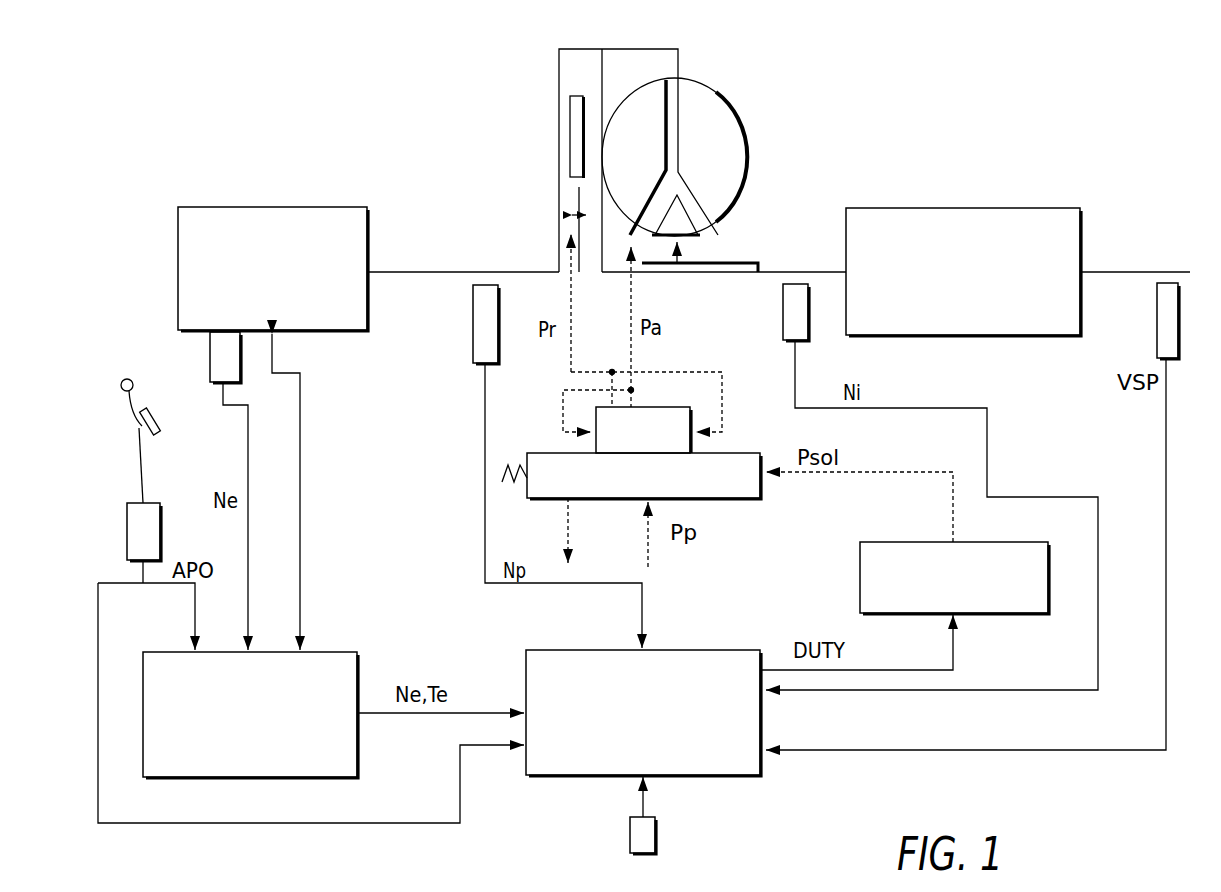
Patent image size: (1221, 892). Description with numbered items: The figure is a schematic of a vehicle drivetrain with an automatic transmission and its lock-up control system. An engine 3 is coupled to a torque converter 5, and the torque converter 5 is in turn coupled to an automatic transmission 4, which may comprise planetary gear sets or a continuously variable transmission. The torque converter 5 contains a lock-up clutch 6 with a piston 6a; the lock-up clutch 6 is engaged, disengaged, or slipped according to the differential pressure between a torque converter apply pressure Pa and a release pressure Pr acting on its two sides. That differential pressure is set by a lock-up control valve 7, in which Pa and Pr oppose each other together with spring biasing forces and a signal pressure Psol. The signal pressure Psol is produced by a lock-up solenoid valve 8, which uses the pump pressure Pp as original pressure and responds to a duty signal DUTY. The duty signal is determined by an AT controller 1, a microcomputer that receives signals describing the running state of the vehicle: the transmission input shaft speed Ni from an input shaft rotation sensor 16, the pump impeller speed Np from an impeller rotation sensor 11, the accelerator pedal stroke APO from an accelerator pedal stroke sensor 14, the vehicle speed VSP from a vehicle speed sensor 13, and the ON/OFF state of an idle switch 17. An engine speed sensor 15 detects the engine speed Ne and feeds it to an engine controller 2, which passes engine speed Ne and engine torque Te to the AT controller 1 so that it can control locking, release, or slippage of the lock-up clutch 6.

The AT controller 1 is at (573, 660).
The engine controller 2 is at (178, 658).
The engine 3 is at (223, 222).
The automatic transmission 4 is at (892, 218).
The torque converter 5 is at (735, 86).
The lock-up clutch 6 is at (577, 83).
The piston 6a is at (580, 187).
The lock-up control valve 7 is at (739, 431).
The lock-up solenoid valve 8 is at (897, 545).
The impeller rotation sensor 11 is at (473, 338).
The vehicle speed sensor 13 is at (1178, 325).
The accelerator pedal stroke sensor 14 is at (127, 535).
The engine speed sensor 15 is at (210, 348).
The input shaft rotation sensor 16 is at (783, 302).
The idle switch 17 is at (657, 827).